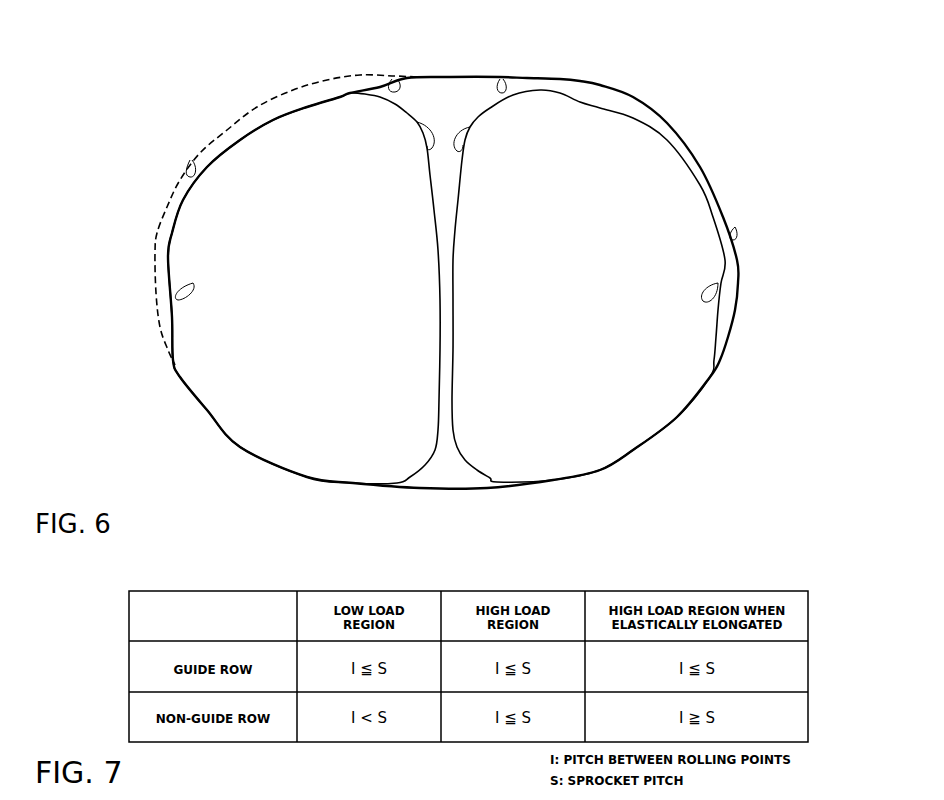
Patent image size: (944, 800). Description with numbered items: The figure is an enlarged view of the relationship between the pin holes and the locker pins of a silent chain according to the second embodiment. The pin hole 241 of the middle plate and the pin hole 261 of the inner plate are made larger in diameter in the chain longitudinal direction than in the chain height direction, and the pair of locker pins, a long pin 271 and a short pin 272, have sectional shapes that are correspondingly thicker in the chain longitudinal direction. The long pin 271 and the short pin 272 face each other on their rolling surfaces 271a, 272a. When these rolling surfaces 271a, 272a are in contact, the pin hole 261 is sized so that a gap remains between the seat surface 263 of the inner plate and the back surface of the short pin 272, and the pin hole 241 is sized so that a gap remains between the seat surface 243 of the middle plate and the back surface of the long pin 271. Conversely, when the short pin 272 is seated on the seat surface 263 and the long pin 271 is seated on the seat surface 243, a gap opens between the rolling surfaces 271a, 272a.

The pin hole of middle plate 241 is at (397, 78).
The seat surface of middle plate 243 is at (193, 283).
The pin hole of inner plate 261 is at (504, 80).
The seat surface of inner plate 263 is at (718, 285).
The long pin 271 is at (302, 177).
The rolling surface of long pin 271a is at (420, 123).
The short pin 272 is at (573, 197).
The rolling surface of short pin 272a is at (462, 127).